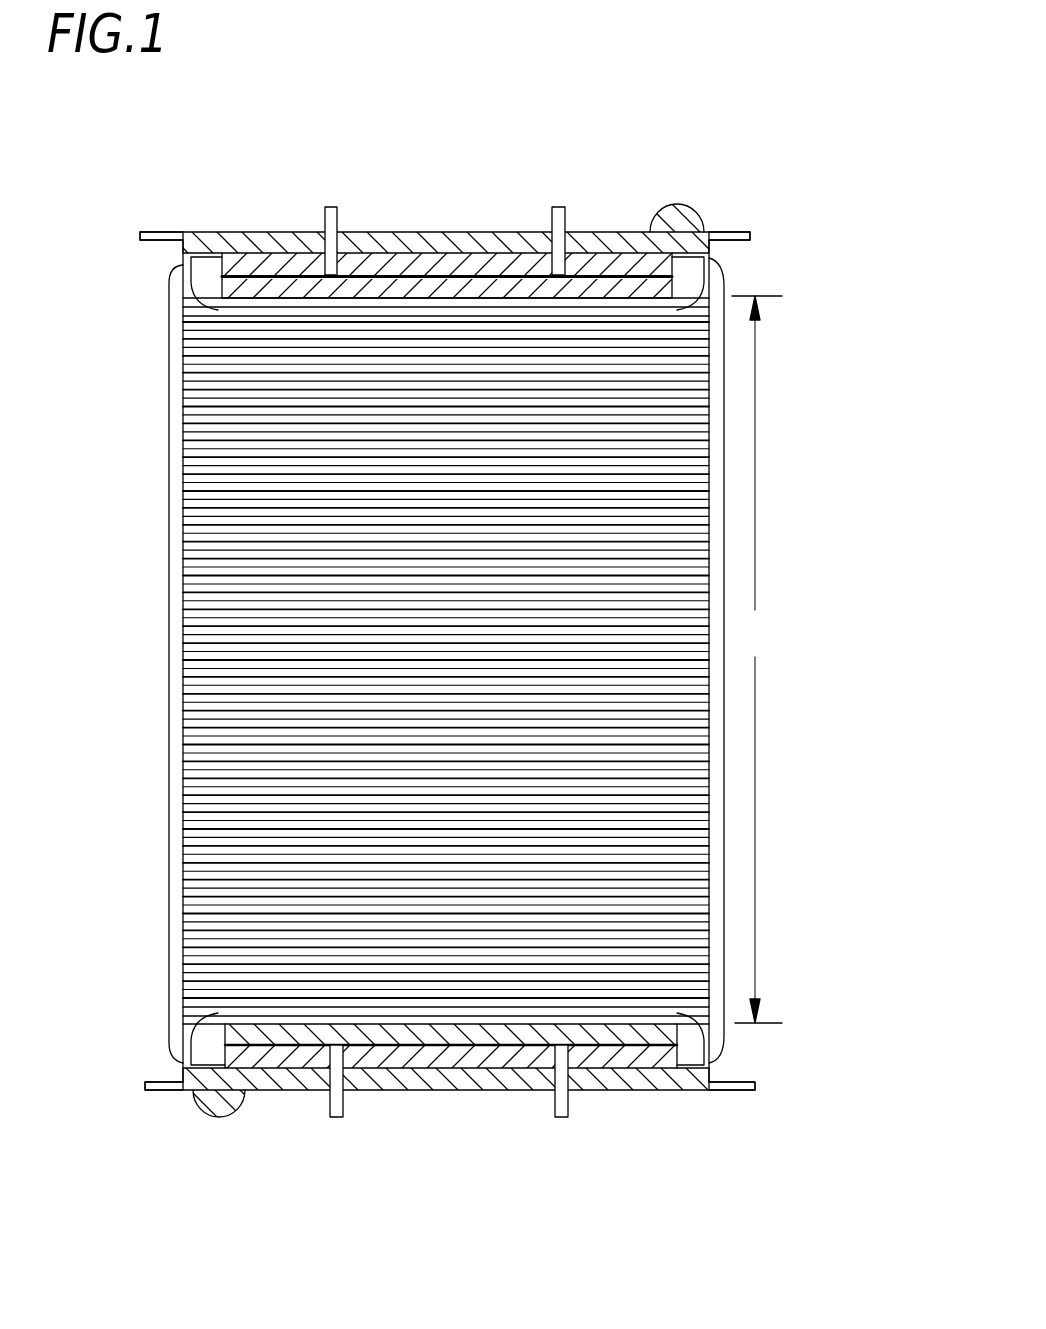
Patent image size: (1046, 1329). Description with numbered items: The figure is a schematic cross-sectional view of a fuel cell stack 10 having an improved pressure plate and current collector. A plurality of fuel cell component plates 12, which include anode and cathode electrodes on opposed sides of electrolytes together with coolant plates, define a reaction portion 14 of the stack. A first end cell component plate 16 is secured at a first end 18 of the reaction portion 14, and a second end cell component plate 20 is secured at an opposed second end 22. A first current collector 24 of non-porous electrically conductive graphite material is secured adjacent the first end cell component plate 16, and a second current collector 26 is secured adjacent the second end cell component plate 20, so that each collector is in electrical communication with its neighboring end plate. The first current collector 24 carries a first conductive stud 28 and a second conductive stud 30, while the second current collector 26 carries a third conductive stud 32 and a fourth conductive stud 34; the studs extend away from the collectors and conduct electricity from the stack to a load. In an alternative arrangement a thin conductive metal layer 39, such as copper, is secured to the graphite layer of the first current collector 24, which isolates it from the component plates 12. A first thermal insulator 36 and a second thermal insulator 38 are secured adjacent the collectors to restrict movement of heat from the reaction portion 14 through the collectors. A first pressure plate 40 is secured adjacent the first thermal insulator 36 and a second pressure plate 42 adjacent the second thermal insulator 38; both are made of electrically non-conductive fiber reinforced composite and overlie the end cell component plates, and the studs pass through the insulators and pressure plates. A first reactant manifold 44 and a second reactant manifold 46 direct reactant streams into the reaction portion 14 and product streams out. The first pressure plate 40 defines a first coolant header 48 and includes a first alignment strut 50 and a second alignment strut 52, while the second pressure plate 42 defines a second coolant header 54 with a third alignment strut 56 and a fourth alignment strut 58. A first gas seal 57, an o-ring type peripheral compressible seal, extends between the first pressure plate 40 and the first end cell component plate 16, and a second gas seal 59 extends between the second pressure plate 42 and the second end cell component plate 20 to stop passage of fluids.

The fuel cell stack 10 is at (762, 78).
The fuel cell component plates 12 is at (183, 572).
The reaction portion 14 is at (755, 659).
The first end cell component plate 16 is at (183, 316).
The first end 18 is at (775, 296).
The second end cell component plate 20 is at (205, 1030).
The second end 22 is at (782, 1023).
The first current collector 24 is at (438, 288).
The second current collector 26 is at (490, 1033).
The first conductive stud 28 is at (327, 215).
The second conductive stud 30 is at (560, 215).
The third conductive stud 32 is at (326, 1106).
The fourth conductive stud 34 is at (560, 1112).
The first thermal insulator 36 is at (390, 246).
The second thermal insulator 38 is at (402, 1078).
The thin conductive metal layer 39 is at (500, 270).
The first pressure plate 40 is at (230, 246).
The second pressure plate 42 is at (622, 1066).
The first reactant manifold 44 is at (177, 698).
The second reactant manifold 46 is at (714, 558).
The first coolant header 48 is at (690, 215).
The first alignment strut 50 is at (157, 236).
The second alignment strut 52 is at (745, 233).
The second coolant header 54 is at (212, 1120).
The third alignment strut 56 is at (165, 1092).
The first gas seal 57 is at (208, 268).
The fourth alignment strut 58 is at (735, 1092).
The second gas seal 59 is at (200, 1062).